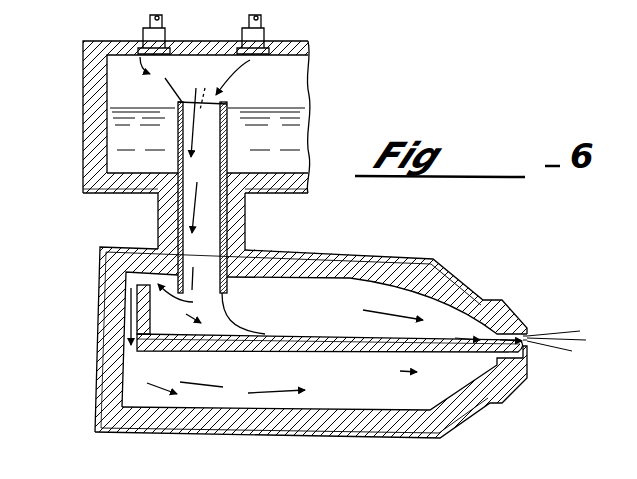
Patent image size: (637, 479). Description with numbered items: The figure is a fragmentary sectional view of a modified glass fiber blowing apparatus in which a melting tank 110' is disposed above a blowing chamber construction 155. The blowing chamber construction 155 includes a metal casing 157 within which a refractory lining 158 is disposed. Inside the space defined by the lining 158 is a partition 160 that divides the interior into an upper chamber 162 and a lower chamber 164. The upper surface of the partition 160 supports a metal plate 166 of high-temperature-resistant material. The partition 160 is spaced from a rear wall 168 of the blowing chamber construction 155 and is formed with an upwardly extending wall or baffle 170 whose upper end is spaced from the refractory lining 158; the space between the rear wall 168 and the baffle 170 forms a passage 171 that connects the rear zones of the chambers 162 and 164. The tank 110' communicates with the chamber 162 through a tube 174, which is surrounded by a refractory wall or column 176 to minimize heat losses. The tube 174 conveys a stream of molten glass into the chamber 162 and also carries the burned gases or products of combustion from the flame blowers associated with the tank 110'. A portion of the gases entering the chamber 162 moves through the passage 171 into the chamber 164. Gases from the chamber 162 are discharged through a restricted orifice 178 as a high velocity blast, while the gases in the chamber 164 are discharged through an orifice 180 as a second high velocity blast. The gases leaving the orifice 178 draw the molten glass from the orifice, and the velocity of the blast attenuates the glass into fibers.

The tank 110' is at (168, 104).
The blowing chamber construction 155 is at (434, 257).
The metal casing 157 is at (467, 287).
The refractory lining 158 is at (447, 417).
The partition 160 is at (273, 351).
The chamber 162 is at (356, 306).
The chamber 164 is at (282, 387).
The metal plate 166 is at (481, 347).
The rear wall 168 is at (110, 352).
The baffle 170 is at (151, 316).
The passage 171 is at (130, 313).
The tube 174 is at (184, 208).
The refractory wall 176 is at (233, 231).
The restricted orifice 178 is at (529, 339).
The orifice 180 is at (532, 357).